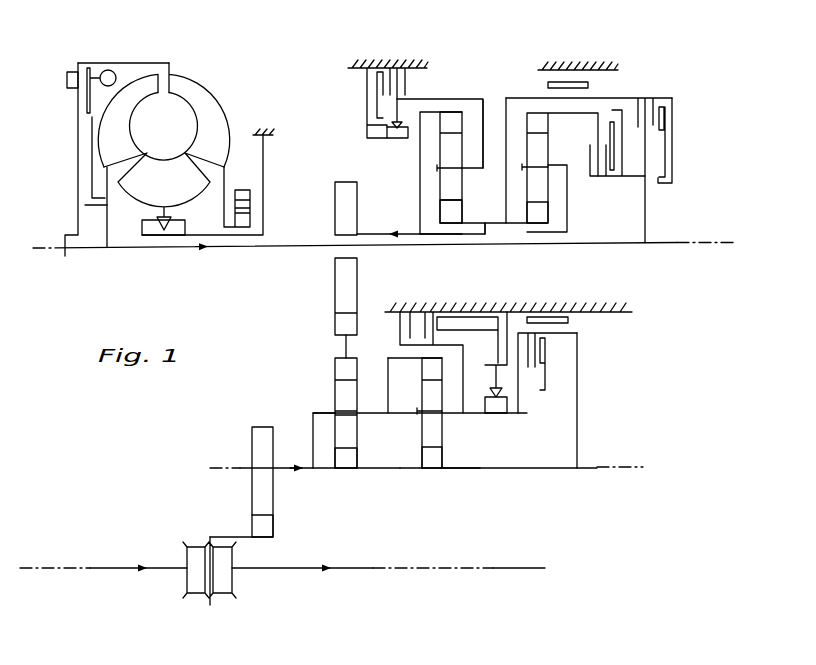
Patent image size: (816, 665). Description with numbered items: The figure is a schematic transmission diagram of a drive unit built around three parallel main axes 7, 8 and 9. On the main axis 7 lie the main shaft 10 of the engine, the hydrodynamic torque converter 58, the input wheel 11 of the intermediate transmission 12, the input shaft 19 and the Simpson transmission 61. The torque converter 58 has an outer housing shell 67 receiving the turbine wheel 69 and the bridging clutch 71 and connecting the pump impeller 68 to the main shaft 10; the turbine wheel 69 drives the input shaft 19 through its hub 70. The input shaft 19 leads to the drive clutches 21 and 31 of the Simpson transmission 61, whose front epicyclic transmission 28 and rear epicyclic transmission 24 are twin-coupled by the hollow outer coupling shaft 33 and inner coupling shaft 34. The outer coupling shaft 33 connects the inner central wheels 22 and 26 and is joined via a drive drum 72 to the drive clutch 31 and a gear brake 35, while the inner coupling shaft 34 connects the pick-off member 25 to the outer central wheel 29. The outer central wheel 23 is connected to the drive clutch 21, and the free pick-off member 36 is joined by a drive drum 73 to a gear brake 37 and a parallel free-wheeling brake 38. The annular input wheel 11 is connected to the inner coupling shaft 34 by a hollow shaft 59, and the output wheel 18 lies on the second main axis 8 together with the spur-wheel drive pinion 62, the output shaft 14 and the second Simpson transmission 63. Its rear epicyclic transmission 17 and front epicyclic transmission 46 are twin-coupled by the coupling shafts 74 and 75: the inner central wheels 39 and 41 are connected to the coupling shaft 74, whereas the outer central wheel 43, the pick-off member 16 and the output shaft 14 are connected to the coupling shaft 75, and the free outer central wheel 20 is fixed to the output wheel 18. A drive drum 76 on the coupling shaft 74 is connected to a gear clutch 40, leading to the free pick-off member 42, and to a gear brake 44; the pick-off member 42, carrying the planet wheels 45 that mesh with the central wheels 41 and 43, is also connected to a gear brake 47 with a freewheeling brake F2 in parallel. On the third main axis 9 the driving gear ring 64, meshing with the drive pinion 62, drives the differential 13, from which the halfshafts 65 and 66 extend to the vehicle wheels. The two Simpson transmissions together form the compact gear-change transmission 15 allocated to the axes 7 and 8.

The main axis 7 is at (33, 247).
The second main axis 8 is at (213, 463).
The third main axis 9 is at (38, 563).
The main shaft 10 is at (72, 230).
The input wheel 11 is at (342, 177).
The intermediate transmission 12 is at (328, 272).
The differential 13 is at (200, 540).
The output shaft 14 is at (298, 487).
The gear-change transmission 15 is at (657, 258).
The pick-off member 16 is at (377, 420).
The rear epicyclic transmission 17 is at (425, 480).
The output wheel 18 is at (333, 330).
The input shaft 19 is at (257, 253).
The free outer central wheel 20 is at (342, 367).
The drive clutch 21 is at (605, 182).
The inner central wheel 22 is at (458, 213).
The outer central wheel 23 is at (533, 120).
The rear epicyclic transmission 24 is at (552, 183).
The pick-off member 25 is at (550, 167).
The inner central wheel 26 is at (538, 213).
The front epicyclic transmission 28 is at (435, 183).
The outer central wheel 29 is at (448, 115).
The drive clutch 31 is at (675, 137).
The outer coupling shaft 33 is at (485, 230).
The inner coupling shaft 34 is at (448, 237).
The gear brake 35 is at (574, 70).
The free pick-off member 36 is at (470, 163).
The gear brake 37 is at (388, 65).
The free-wheeling brake 38 is at (393, 150).
The inner central wheel 39 is at (355, 473).
The gear clutch 40 is at (552, 358).
The inner central wheel 41 is at (433, 460).
The free pick-off member 42 is at (450, 432).
The outer central wheel 43 is at (415, 382).
The gear brake 44 is at (562, 308).
The planet wheels 45 is at (433, 393).
The front epicyclic transmission 46 is at (347, 477).
The gear brake 47 is at (402, 308).
The hydrodynamic torque converter 58 is at (222, 88).
The hollow shaft 59 is at (368, 236).
The Simpson transmission 61 is at (472, 80).
The spur-wheel drive pinion 62 is at (253, 425).
The second Simpson transmission 63 is at (380, 480).
The driving gear ring 64 is at (258, 525).
The halfshaft 65 is at (253, 572).
The halfshaft 66 is at (155, 572).
The outer housing shell 67 is at (115, 62).
The pump impeller 68 is at (217, 137).
The turbine wheel 69 is at (147, 87).
The hub 70 is at (110, 227).
The bridging clutch 71 is at (78, 110).
The drive drum 72 is at (623, 98).
The drive drum 73 is at (423, 98).
The coupling shaft 74 is at (403, 470).
The coupling shaft 75 is at (383, 382).
The drive drum 76 is at (580, 374).
The freewheeling brake F2 is at (497, 405).